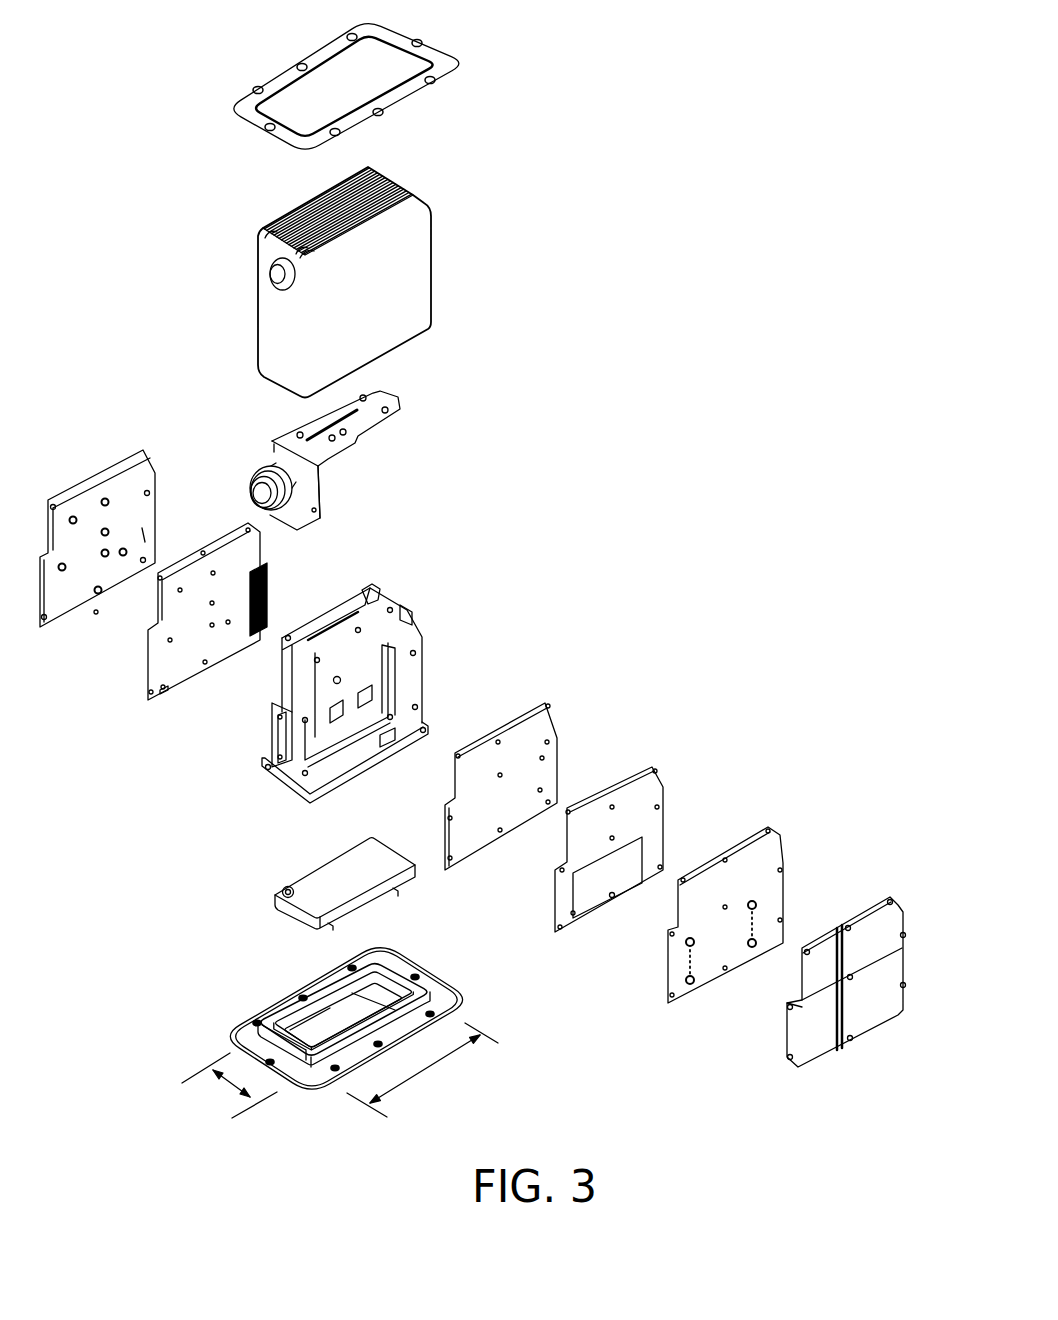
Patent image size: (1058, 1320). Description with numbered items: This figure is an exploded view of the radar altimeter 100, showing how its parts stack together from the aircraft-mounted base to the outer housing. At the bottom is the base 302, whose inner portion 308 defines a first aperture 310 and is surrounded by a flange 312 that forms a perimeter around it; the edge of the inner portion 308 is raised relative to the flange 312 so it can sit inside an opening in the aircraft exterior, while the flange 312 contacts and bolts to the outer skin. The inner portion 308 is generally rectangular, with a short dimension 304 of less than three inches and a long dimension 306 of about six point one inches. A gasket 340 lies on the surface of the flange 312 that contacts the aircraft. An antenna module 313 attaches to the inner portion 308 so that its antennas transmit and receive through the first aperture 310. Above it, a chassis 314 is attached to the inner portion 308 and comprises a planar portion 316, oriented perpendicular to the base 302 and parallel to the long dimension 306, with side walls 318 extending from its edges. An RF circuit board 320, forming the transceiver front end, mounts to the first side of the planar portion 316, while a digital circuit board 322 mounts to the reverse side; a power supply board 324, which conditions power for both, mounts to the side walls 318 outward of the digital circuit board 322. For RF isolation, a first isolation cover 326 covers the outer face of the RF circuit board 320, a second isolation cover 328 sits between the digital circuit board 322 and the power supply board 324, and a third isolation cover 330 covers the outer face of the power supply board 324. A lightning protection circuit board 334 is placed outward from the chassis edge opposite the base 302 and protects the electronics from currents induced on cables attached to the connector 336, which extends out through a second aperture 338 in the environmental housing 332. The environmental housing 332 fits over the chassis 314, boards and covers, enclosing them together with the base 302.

The radar altimeter 100 is at (758, 450).
The base 302 is at (351, 1017).
The short dimension 304 is at (217, 1076).
The long dimension 306 is at (422, 1070).
The inner portion 308 is at (358, 957).
The first aperture 310 is at (308, 1022).
The flange 312 is at (442, 1000).
The antenna module 313 is at (317, 882).
The chassis 314 is at (357, 664).
The planar portion 316 is at (368, 670).
The side walls 318 is at (407, 638).
The radio frequency (RF) circuit board 320 is at (157, 647).
The digital circuit board 322 is at (510, 735).
The power supply board 324 is at (755, 852).
The first isolation cover 326 is at (145, 475).
The second isolation cover 328 is at (632, 792).
The third isolation cover 330 is at (865, 922).
The environmental housing 332 is at (347, 282).
The lightning protection circuit board 334 is at (339, 460).
The connector 336 is at (272, 470).
The second aperture 338 is at (282, 282).
The gasket 340 is at (443, 65).